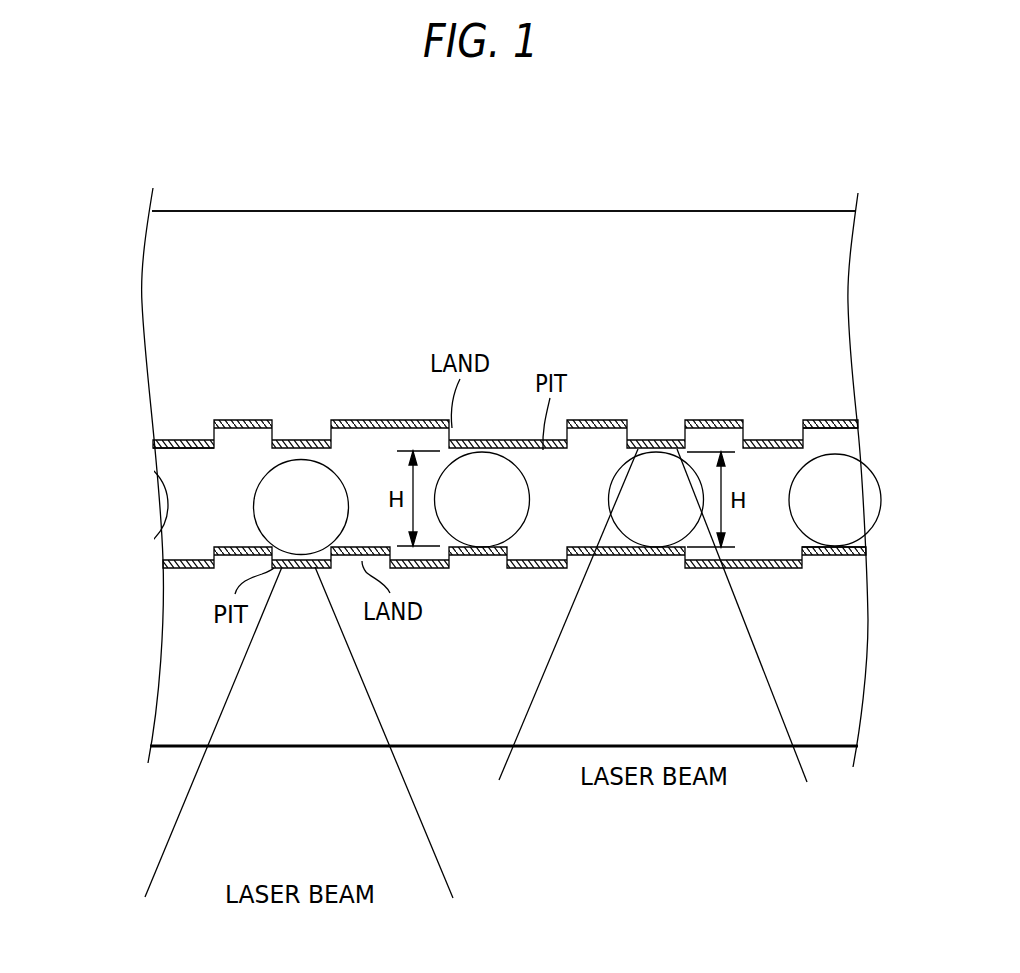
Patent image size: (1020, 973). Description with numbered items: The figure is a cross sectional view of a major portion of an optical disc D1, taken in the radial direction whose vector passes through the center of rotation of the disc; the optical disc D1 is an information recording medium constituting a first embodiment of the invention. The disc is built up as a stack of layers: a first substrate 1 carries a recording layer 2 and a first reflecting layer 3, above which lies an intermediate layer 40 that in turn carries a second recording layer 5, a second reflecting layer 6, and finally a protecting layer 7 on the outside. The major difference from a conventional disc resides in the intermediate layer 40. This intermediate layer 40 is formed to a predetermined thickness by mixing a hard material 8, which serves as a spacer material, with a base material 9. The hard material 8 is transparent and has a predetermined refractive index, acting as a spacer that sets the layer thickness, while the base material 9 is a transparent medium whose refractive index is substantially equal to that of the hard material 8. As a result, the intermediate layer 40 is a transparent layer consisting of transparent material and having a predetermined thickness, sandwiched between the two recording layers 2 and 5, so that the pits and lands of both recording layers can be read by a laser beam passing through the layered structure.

The first substrate 1 is at (852, 685).
The recording layer 2 is at (847, 557).
The first reflecting layer 3 is at (852, 544).
The recording layer 5 is at (843, 433).
The second reflecting layer 6 is at (843, 424).
The protecting layer 7 is at (835, 290).
The hard material 8 is at (328, 480).
The base material 9 is at (225, 463).
The intermediate layer 40 is at (114, 480).
The optical disc D1 is at (637, 203).